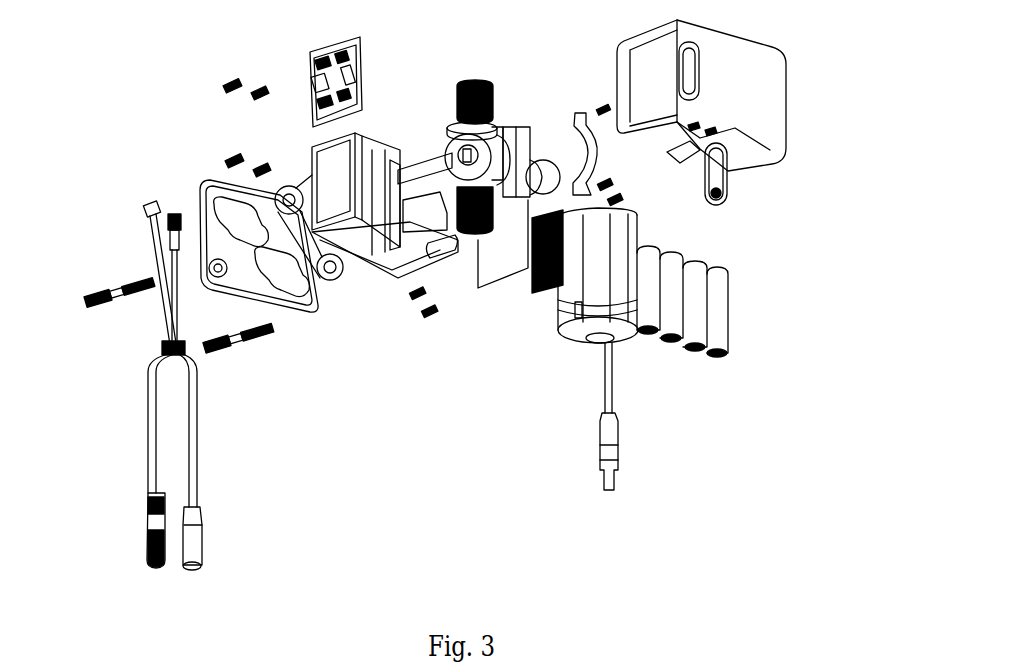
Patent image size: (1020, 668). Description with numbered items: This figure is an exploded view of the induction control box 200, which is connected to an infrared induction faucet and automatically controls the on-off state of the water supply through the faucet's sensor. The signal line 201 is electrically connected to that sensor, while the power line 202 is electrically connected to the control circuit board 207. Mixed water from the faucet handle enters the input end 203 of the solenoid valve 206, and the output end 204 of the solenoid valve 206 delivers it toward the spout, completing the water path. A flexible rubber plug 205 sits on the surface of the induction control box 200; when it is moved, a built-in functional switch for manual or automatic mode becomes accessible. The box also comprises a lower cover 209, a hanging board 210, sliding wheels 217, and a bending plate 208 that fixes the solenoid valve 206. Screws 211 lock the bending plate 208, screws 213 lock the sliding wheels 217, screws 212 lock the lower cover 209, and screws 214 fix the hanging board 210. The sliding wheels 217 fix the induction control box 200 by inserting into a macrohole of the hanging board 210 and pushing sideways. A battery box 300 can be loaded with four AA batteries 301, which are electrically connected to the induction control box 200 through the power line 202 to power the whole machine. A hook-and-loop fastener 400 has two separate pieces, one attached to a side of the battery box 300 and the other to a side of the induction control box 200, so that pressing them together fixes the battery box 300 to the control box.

The induction control box 200 is at (792, 104).
The signal line 201 is at (141, 540).
The power line 202 is at (205, 552).
The input end of the solenoid valve 203 is at (462, 208).
The output end of the solenoid valve 204 is at (473, 234).
The flexible rubber plug 205 is at (735, 192).
The solenoid valve 206 is at (535, 147).
The control circuit board 207 is at (336, 50).
The bending plate 208 is at (576, 110).
The lower cover 209 is at (397, 130).
The hanging board 210 is at (195, 185).
The screws 211 is at (604, 120).
The screws 212 is at (262, 168).
The screws 213 is at (408, 296).
The screws 214 is at (90, 306).
The sliding wheels 217 is at (290, 215).
The battery box 300 is at (630, 342).
The AA batteries 301 is at (733, 325).
The hook-and-loop fastener 400 is at (507, 273).